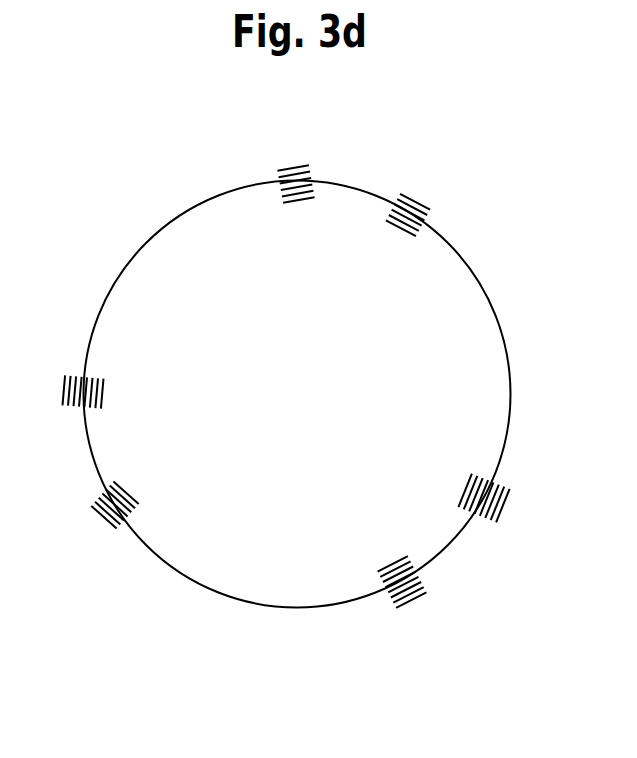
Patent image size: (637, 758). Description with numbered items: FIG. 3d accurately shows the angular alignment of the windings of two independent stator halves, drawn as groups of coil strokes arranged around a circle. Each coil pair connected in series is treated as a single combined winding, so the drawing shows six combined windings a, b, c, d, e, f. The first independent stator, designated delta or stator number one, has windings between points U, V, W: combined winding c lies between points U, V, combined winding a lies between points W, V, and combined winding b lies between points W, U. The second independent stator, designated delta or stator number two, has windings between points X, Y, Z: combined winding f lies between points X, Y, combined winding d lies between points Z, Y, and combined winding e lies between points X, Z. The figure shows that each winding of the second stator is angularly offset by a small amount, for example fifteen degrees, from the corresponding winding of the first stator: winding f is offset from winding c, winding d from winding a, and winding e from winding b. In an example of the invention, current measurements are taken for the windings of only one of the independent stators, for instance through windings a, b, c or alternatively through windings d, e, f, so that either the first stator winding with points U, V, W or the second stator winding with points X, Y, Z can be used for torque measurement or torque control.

The combined winding a is at (483, 512).
The combined winding b is at (106, 500).
The combined winding c is at (303, 183).
The combined winding d is at (399, 589).
The combined winding e is at (81, 380).
The combined winding f is at (410, 215).
The winding point U is at (312, 162).
The winding point V is at (313, 205).
The winding point W is at (89, 501).
The winding point X is at (106, 408).
The winding point Y is at (403, 603).
The winding point Z is at (62, 406).